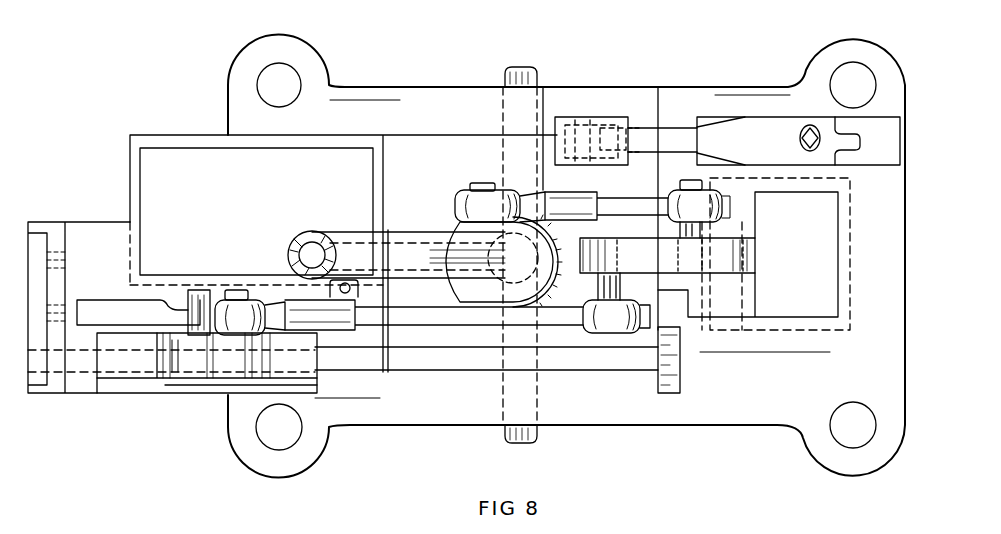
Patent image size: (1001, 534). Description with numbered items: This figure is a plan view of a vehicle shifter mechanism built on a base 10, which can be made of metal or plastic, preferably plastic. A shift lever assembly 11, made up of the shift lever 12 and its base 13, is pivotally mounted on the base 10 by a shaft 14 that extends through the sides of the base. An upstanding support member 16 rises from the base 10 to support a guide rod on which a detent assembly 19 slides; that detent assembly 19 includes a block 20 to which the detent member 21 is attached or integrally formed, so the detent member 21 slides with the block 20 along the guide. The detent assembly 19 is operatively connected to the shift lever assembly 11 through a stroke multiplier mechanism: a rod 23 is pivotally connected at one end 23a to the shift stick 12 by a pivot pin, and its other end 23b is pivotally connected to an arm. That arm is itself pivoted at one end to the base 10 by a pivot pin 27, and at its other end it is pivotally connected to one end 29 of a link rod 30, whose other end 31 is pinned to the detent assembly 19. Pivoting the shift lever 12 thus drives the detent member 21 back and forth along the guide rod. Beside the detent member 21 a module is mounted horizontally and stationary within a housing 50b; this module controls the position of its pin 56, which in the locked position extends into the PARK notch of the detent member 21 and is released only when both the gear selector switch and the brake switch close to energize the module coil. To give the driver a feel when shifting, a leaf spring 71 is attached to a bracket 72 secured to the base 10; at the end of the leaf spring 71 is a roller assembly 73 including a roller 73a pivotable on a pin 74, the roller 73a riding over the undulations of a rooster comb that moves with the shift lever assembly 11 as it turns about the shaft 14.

The base 10 is at (447, 418).
The shift lever assembly 11 is at (466, 268).
The shift lever 12 is at (348, 230).
The base 13 is at (539, 262).
The shaft 14 is at (535, 440).
The upstanding support member 16 is at (62, 285).
The detent assembly 19 is at (181, 370).
The block 20 is at (138, 357).
The detent member 21 is at (97, 312).
The rod 23 is at (632, 200).
The end of rod 23a is at (462, 197).
The other end of rod 23b is at (722, 206).
The pivot pin 27 is at (733, 258).
The end of link rod 29 is at (588, 332).
The link rod 30 is at (430, 318).
The other end of link rod 31 is at (218, 300).
The housing 50b is at (170, 167).
The pin 56 is at (380, 293).
The leaf spring 71 is at (683, 135).
The bracket 72 is at (865, 150).
The roller assembly 73 is at (587, 117).
The roller 73a is at (593, 117).
The pin 74 is at (573, 118).